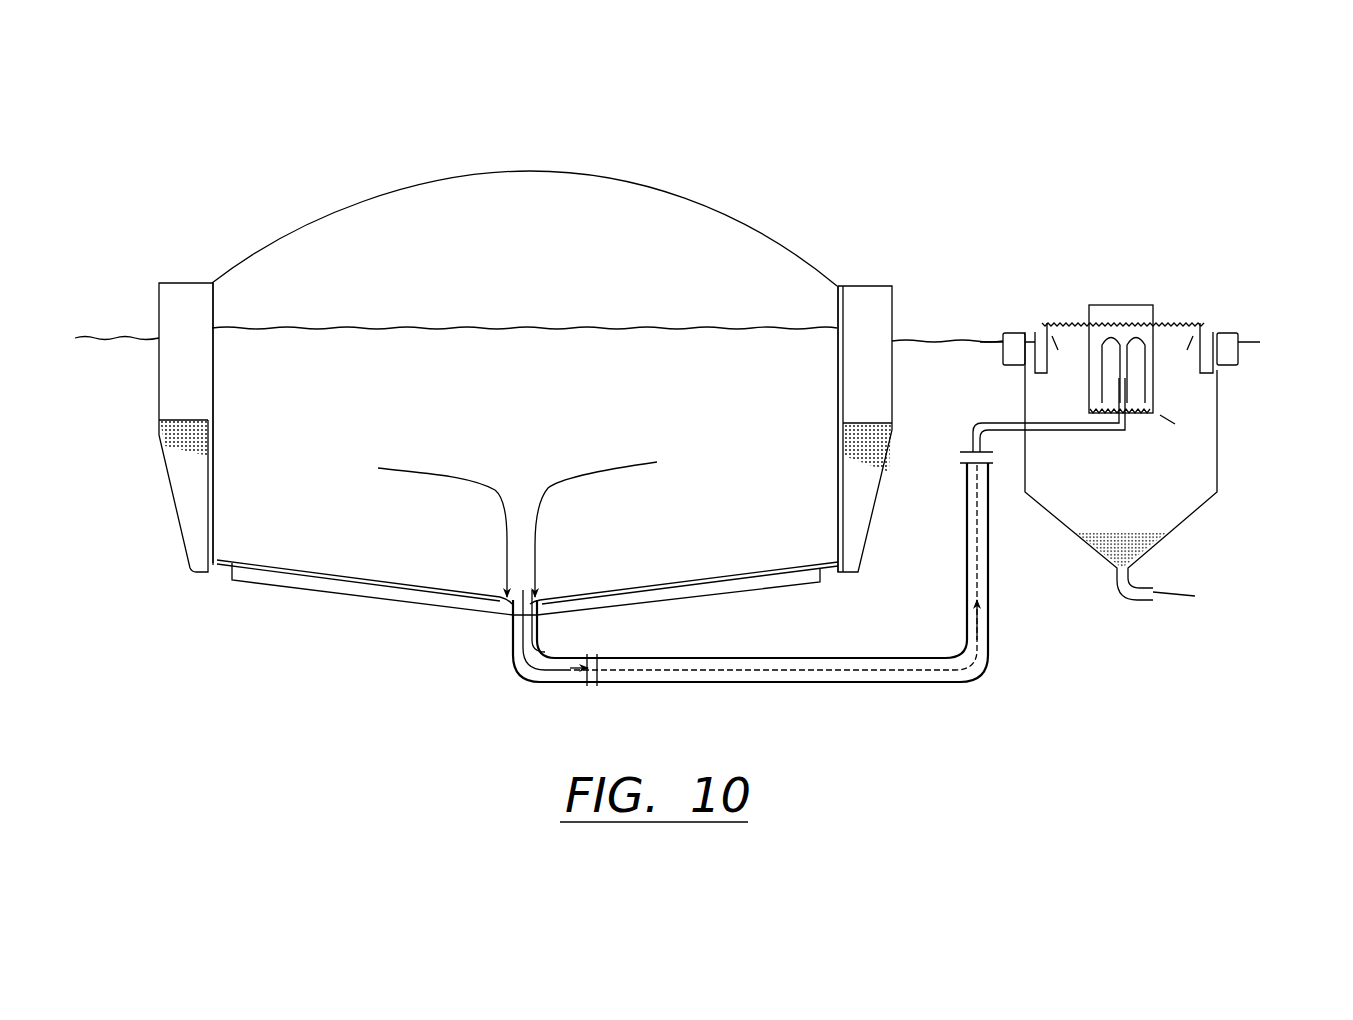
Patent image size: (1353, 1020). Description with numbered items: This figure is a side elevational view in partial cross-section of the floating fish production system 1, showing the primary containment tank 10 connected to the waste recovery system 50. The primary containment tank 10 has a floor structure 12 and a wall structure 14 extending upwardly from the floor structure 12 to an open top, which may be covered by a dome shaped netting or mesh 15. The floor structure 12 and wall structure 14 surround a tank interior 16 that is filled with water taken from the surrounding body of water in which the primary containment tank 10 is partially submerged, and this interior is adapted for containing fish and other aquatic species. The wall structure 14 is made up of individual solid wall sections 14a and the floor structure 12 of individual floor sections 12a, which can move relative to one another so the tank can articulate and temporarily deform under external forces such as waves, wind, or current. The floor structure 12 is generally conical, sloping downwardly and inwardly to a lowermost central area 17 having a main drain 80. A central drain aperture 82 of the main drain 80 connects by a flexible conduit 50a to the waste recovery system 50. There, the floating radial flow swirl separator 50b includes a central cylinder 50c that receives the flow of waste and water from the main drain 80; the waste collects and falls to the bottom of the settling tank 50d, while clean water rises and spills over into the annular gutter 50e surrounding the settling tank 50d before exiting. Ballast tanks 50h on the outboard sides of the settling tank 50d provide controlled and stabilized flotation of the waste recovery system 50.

The floating fish production system 1 is at (700, 162).
The primary containment tank 10 is at (884, 283).
The floor structure 12 is at (340, 596).
The floor sections 12a is at (274, 563).
The wall structure 14 is at (190, 475).
The wall sections 14a is at (214, 352).
The dome shaped netting or mesh 15 is at (352, 200).
The tank interior 16 is at (523, 388).
The lowermost central area 17 is at (485, 597).
The waste recovery system 50 is at (1142, 285).
The flexible conduit 50a is at (754, 656).
The floating radial flow swirl separator 50b is at (1224, 452).
The central cylinder 50c is at (1157, 388).
The settling tank 50d is at (1218, 475).
The annular gutter 50e is at (1026, 383).
The ballast tanks 50h is at (1013, 334).
The main drain 80 is at (553, 597).
The central drain aperture 82 is at (513, 635).